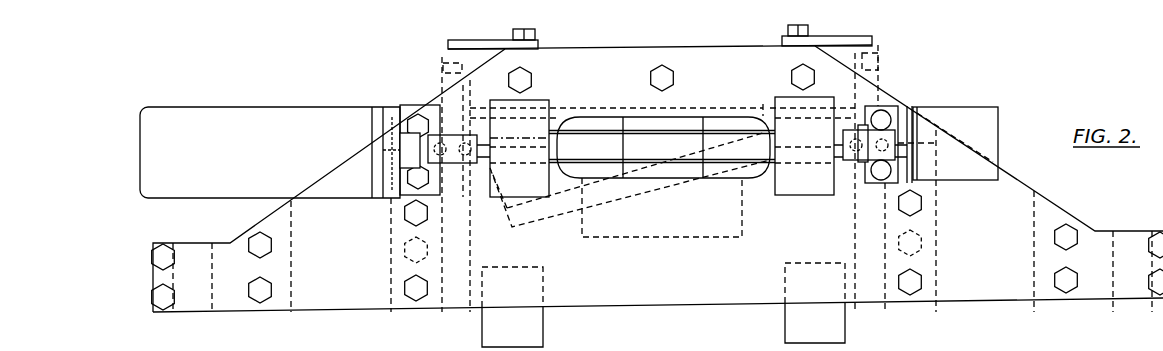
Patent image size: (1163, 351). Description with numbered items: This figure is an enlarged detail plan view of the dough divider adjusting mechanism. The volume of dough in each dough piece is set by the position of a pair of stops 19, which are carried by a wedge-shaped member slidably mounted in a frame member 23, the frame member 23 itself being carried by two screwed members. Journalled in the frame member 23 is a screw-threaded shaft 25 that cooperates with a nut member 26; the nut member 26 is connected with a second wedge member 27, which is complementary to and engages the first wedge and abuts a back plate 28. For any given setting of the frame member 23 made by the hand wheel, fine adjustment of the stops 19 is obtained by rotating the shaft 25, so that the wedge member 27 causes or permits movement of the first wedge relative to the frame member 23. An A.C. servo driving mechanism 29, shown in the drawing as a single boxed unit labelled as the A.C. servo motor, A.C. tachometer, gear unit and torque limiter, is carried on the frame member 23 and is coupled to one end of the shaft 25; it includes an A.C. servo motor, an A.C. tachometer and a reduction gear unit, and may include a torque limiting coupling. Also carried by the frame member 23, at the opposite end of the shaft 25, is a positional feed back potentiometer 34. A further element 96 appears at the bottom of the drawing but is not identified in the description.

The stops 19 is at (537, 323).
The frame member 23 is at (277, 218).
The screw-threaded shaft 25 is at (725, 135).
The nut member 26 is at (670, 127).
The second wedge member 27 is at (571, 185).
The back plate 28 is at (577, 108).
The A.C. servo driving mechanism 29 is at (265, 110).
The positional feed back potentiometer 34 is at (967, 114).
The connection 96 is at (916, 350).